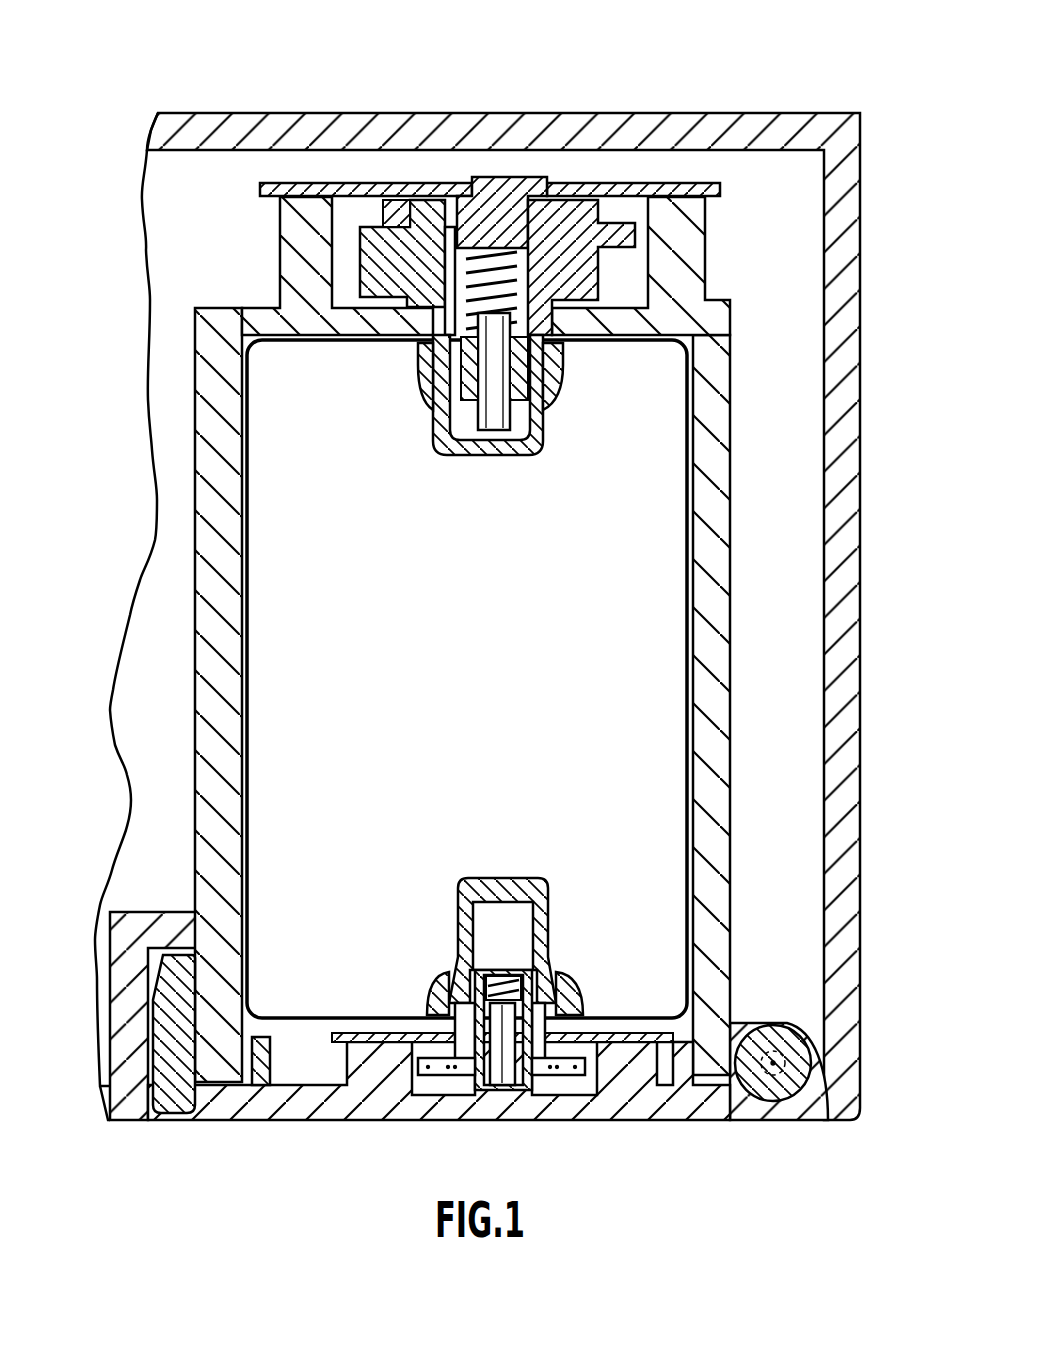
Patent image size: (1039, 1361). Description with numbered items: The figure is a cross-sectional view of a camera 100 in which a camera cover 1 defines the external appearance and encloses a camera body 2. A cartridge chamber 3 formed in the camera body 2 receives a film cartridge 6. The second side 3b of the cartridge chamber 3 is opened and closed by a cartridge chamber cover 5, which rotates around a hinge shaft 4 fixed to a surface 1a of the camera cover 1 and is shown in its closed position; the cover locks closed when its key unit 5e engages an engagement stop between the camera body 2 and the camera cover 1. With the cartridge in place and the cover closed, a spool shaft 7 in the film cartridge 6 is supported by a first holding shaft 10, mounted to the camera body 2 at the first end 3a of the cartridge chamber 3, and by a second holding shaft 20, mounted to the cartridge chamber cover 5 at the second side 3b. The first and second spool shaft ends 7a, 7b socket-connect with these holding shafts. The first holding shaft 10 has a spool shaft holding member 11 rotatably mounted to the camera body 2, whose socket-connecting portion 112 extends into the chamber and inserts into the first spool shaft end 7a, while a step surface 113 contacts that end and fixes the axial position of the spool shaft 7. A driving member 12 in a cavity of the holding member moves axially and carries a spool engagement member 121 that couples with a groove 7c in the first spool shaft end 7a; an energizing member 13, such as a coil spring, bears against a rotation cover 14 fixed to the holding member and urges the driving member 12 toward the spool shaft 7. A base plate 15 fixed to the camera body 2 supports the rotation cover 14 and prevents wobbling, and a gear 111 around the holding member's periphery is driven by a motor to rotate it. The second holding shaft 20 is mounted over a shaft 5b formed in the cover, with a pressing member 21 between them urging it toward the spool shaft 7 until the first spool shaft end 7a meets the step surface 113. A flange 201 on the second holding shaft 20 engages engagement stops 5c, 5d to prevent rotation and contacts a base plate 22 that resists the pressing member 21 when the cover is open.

The camera 100 is at (190, 72).
The camera cover 1 is at (668, 118).
The surface 1a is at (787, 1122).
The camera body 2 is at (688, 245).
The cartridge chamber 3 is at (700, 578).
The first end 3a is at (618, 338).
The second side 3b is at (305, 1045).
The hinge shaft 4 is at (822, 1072).
The cartridge chamber cover 5 is at (636, 1105).
The shaft 5b is at (510, 1082).
The engagement stop 5c is at (567, 1088).
The engagement stop 5d is at (437, 1092).
The key unit 5e is at (165, 1030).
The film cartridge 6 is at (384, 655).
The spool shaft 7 is at (492, 878).
The first spool shaft end 7a is at (545, 412).
The second spool shaft end 7b is at (543, 930).
The groove 7c is at (440, 435).
The first holding shaft 10 is at (455, 465).
The spool shaft holding member 11 is at (410, 282).
The driving member 12 is at (500, 432).
The energizing member 13 is at (535, 262).
The rotation cover 14 is at (513, 207).
The base plate 15 is at (272, 186).
The second holding shaft 20 is at (485, 948).
The pressing member 21 is at (503, 990).
The base plate 22 is at (378, 1033).
The gear 111 is at (352, 240).
The socket-connecting portion 112 is at (540, 400).
The step surface 113 is at (540, 390).
The spool engagement member 121 is at (445, 380).
The flange 201 is at (565, 1062).